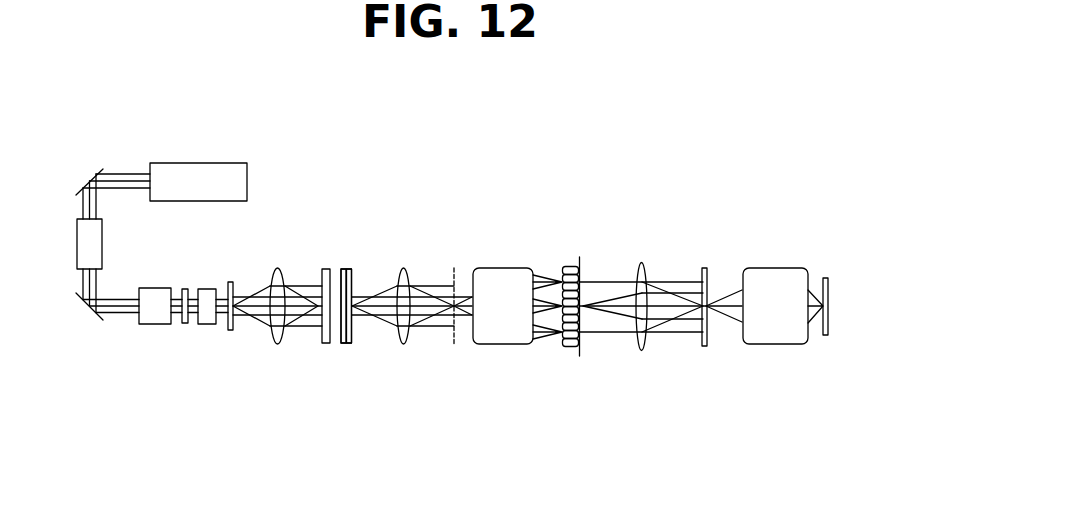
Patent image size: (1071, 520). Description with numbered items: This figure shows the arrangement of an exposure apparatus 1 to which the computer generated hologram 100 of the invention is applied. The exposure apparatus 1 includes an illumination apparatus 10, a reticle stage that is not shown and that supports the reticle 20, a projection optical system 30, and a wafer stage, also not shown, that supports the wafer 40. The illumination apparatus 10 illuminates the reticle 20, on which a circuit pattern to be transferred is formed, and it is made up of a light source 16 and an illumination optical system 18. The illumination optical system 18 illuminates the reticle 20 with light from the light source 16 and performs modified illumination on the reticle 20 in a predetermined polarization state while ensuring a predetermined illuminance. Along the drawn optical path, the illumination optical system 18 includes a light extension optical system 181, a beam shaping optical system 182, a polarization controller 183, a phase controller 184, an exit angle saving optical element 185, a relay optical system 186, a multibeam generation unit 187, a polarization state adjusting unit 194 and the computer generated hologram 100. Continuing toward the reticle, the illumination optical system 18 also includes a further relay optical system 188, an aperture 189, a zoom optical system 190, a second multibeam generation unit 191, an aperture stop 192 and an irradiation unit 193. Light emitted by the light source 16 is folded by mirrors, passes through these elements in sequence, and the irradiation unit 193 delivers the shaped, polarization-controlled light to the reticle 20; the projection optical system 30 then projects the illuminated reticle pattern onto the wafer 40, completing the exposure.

The exposure apparatus 1 is at (390, 160).
The illumination apparatus 10 is at (72, 388).
The light source 16 is at (196, 161).
The illumination optical system 18 is at (314, 199).
The reticle 20 is at (705, 268).
The projection optical system 30 is at (777, 268).
The wafer 40 is at (824, 278).
The computer generated hologram 100 is at (349, 269).
The light extension optical system 181 is at (103, 245).
The beam shaping optical system 182 is at (147, 325).
The polarization controller 183 is at (185, 325).
The phase controller 184 is at (207, 289).
The exit angle saving optical element 185 is at (231, 331).
The relay optical system 186 is at (278, 267).
The multibeam generation unit 187 is at (325, 268).
The relay optical system 188 is at (404, 345).
The aperture 189 is at (456, 268).
The zoom optical system 190 is at (503, 345).
The multibeam generation unit 191 is at (569, 266).
The aperture stop 192 is at (580, 348).
The irradiation unit 193 is at (643, 262).
The polarization state adjusting unit 194 is at (345, 345).